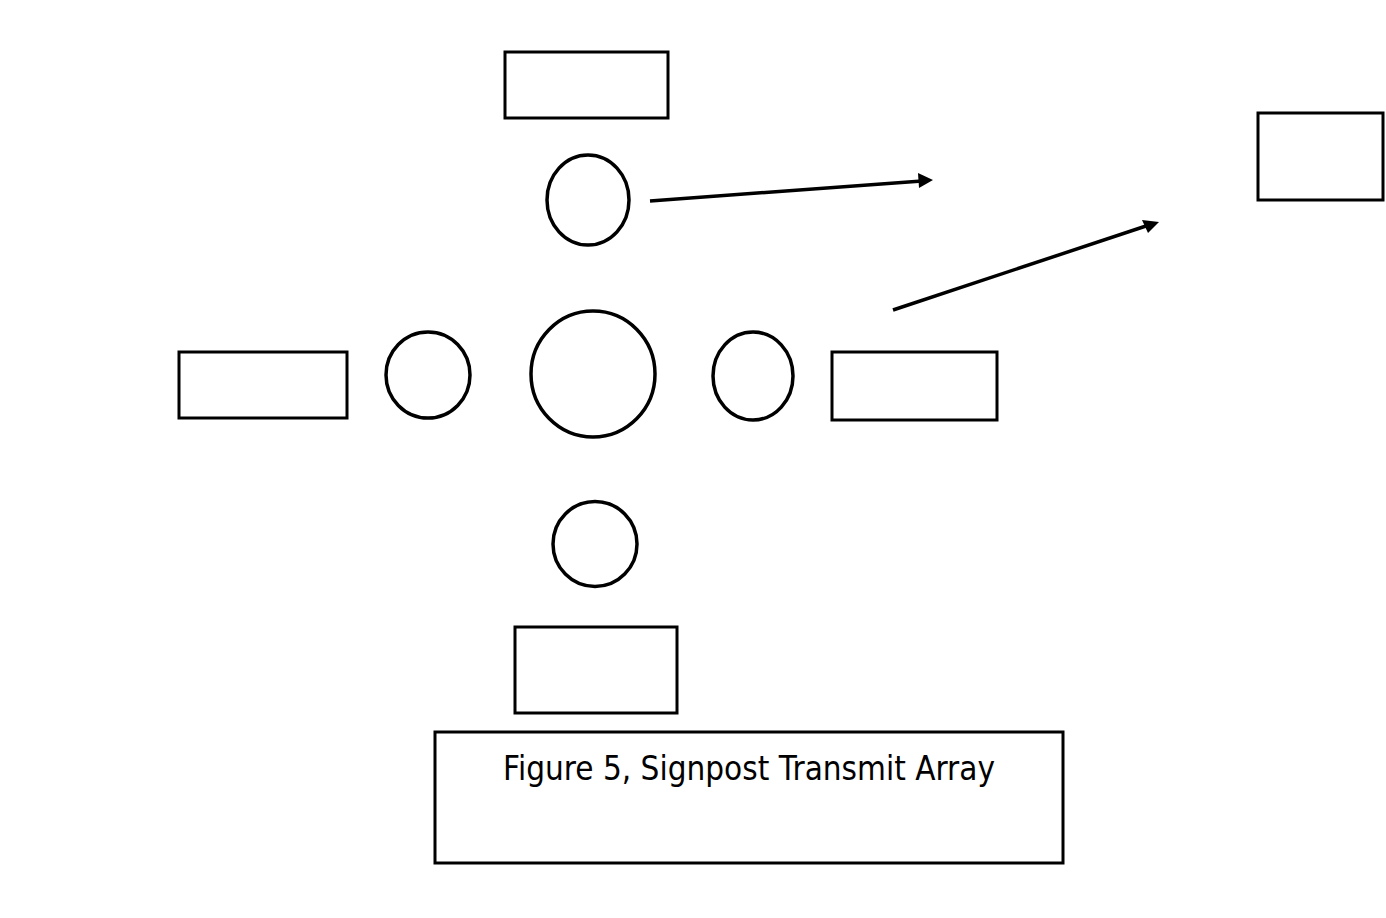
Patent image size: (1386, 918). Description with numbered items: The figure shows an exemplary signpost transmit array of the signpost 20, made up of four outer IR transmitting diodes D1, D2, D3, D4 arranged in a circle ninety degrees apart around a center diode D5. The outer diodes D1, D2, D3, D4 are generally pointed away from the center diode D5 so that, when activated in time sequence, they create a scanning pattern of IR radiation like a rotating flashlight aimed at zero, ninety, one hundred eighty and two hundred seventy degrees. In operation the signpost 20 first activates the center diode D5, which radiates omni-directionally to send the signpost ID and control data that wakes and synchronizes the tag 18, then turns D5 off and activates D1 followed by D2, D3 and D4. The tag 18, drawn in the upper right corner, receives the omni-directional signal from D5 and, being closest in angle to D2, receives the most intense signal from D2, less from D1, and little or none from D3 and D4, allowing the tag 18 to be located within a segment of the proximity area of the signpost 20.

The signpost 20 is at (157, 68).
The tag 18 is at (1315, 205).
The IR transmitting diode D1 is at (588, 200).
The IR transmitting diode D2 is at (753, 376).
The IR transmitting diode D3 is at (595, 544).
The IR transmitting diode D4 is at (428, 375).
The center IR transmitting diode D5 is at (593, 374).